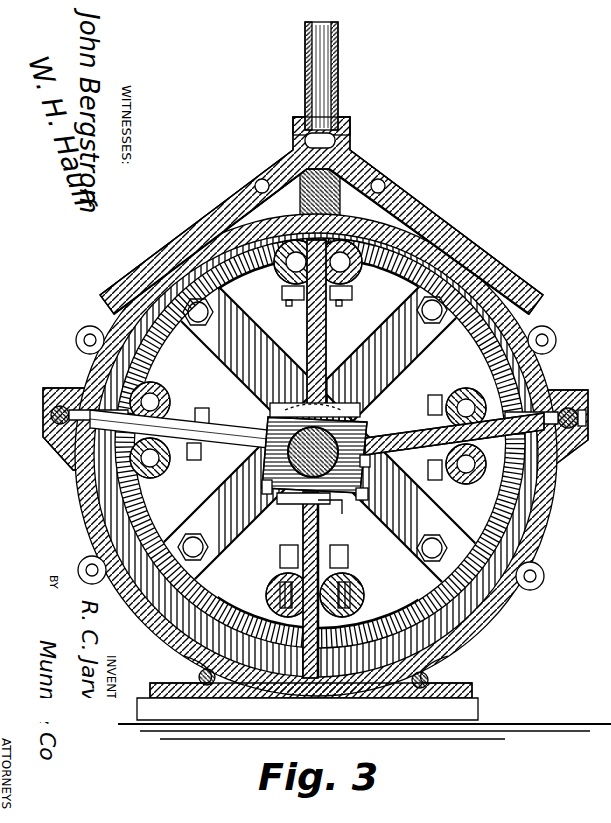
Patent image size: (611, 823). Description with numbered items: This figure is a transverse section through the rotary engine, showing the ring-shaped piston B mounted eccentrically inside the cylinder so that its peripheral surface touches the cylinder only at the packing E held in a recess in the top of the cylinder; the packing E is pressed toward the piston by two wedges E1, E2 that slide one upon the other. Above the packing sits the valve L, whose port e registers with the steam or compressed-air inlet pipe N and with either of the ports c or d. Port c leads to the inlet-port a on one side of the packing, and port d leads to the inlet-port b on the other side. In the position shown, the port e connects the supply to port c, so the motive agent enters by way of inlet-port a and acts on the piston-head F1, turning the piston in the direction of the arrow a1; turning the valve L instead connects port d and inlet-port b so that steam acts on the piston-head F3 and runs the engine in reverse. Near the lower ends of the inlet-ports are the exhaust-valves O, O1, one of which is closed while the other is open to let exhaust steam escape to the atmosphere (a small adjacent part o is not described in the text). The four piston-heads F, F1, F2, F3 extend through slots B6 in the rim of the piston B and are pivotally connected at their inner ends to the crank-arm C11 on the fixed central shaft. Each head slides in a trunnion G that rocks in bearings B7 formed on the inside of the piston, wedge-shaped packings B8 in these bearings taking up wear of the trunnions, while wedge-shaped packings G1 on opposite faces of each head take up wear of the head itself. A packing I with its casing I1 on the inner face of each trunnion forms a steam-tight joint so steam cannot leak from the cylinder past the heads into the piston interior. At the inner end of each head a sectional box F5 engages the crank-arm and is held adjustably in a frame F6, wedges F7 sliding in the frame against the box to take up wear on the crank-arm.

The inlet pipe N is at (330, 96).
The valve L is at (345, 152).
The port e is at (305, 166).
The packing E is at (395, 205).
The wedge E1 is at (352, 172).
The wedge E2 is at (392, 181).
The port d is at (208, 238).
The port c is at (445, 250).
The piston B is at (482, 346).
The slots B6 is at (272, 195).
The bearings B7 is at (288, 265).
The wedge-shaped packings B8 is at (300, 292).
The trunnion G is at (355, 290).
The wedge-shaped packings G1 is at (117, 435).
The packing I is at (305, 411).
The casing I1 is at (344, 347).
The piston-head F is at (308, 341).
The piston-head F1 is at (366, 430).
The piston-head F2 is at (305, 526).
The piston-head F3 is at (213, 455).
The sectional box F5 is at (328, 528).
The frame F6 is at (372, 415).
The wedges F7 is at (328, 372).
The inlet-port a is at (540, 382).
The arrow a1 is at (445, 617).
The inlet-port b is at (92, 372).
The exhaust-valve O is at (578, 411).
The exhaust-valve O1 is at (52, 420).
The nut o is at (582, 437).
The crank-arm C11 is at (370, 462).